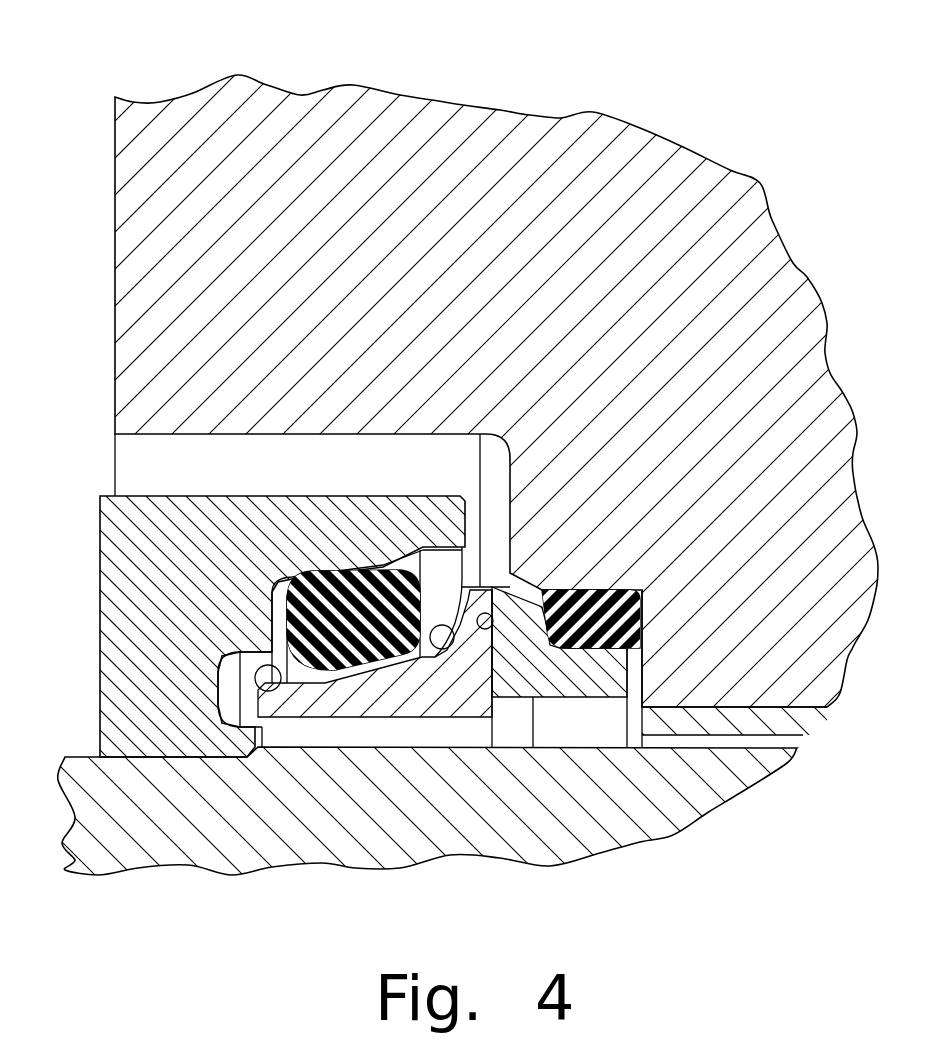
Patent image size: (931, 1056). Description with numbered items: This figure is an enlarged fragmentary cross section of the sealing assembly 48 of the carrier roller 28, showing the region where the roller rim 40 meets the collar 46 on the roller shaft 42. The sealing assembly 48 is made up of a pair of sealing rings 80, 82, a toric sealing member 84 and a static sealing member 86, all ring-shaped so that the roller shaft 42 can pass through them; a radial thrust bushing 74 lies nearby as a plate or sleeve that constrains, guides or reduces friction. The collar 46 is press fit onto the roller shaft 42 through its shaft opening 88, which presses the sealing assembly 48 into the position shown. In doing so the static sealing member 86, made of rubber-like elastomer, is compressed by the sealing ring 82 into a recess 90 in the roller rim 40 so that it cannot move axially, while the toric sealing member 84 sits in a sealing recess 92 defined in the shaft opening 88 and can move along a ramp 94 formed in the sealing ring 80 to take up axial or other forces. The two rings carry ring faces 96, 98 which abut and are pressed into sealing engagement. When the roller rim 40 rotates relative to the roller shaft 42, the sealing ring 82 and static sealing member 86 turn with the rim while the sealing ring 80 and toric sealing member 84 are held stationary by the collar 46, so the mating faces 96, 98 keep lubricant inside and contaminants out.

The carrier roller 28 is at (712, 80).
The roller rim 40 is at (127, 253).
The roller shaft 42 is at (140, 865).
The collar 46 is at (110, 542).
The sealing assembly 48 is at (492, 553).
The radial thrust bushing 74 is at (753, 727).
The sealing ring 80 is at (330, 672).
The sealing ring 82 is at (590, 677).
The toric sealing member 84 is at (398, 698).
The static sealing member 86 is at (634, 686).
The shaft opening 88 is at (100, 755).
The recess 90 is at (642, 687).
The sealing recess 92 is at (452, 545).
The ramp 94 is at (266, 692).
The ring face 96 is at (470, 645).
The ring face 98 is at (560, 697).